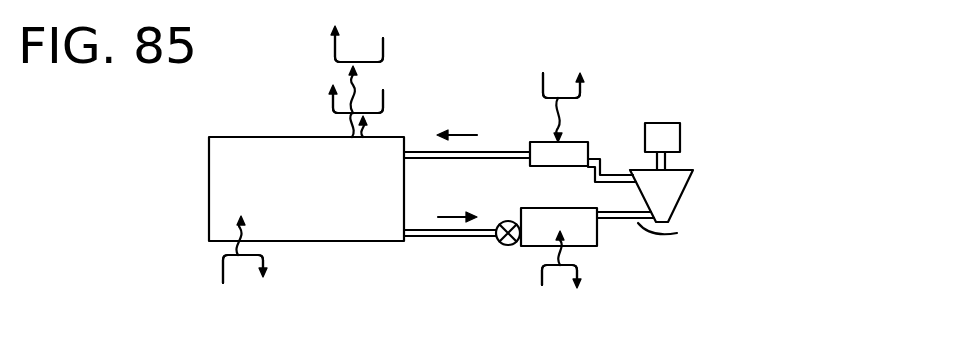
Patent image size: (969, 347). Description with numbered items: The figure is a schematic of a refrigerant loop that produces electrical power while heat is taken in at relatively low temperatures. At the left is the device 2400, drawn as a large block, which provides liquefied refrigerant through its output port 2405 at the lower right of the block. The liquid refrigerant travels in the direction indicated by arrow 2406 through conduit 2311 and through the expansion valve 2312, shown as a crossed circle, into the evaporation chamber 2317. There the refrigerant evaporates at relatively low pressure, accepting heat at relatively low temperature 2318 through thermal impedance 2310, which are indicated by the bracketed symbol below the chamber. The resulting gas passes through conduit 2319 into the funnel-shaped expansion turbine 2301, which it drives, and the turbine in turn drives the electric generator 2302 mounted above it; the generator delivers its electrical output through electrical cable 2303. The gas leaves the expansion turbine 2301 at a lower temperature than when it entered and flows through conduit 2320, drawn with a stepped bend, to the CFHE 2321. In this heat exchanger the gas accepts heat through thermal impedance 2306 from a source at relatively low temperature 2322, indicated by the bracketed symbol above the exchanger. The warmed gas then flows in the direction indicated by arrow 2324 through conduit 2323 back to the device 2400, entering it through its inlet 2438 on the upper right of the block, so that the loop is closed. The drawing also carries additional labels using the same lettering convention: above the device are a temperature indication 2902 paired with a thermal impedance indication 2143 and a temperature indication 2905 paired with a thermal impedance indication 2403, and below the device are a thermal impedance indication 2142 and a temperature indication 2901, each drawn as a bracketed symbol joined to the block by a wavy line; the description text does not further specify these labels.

The device 2400 is at (297, 186).
The inlet 2438 is at (404, 150).
The output port 2405 is at (412, 240).
The conduit 2323 is at (522, 130).
The arrow 2324 is at (460, 124).
The arrow 2406 is at (451, 205).
The conduit 2311 is at (490, 236).
The expansion valve 2312 is at (508, 247).
The evaporation chamber 2317 is at (598, 245).
The CFHE 2321 is at (559, 154).
The conduit 2320 is at (608, 164).
The expansion turbine 2301 is at (685, 193).
The electric generator 2302 is at (658, 123).
The electrical cable 2303 is at (680, 130).
The conduit 2319 is at (694, 233).
The temperature sensor 2902 is at (384, 59).
The valve 2143 is at (396, 46).
The temperature sensor 2905 is at (396, 104).
The valve 2403 is at (395, 100).
The temperature 2322 is at (578, 82).
The thermal impedance 2306 is at (574, 68).
The valve 2142 is at (248, 262).
The temperature sensor 2901 is at (238, 291).
The thermal impedance 2310 is at (569, 274).
The temperature 2318 is at (565, 299).